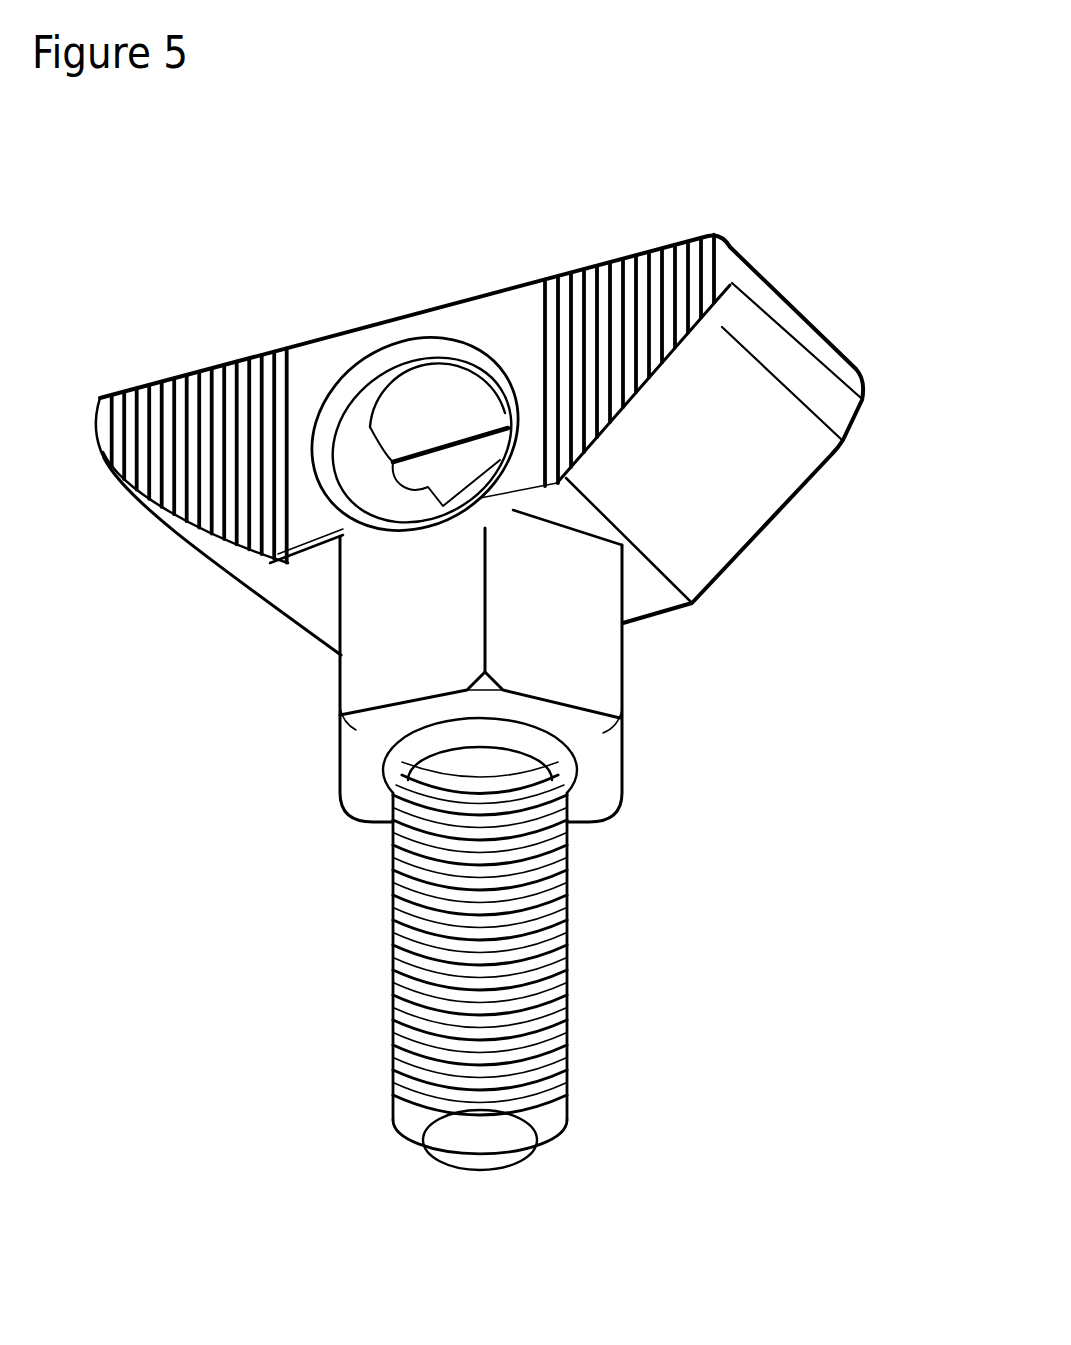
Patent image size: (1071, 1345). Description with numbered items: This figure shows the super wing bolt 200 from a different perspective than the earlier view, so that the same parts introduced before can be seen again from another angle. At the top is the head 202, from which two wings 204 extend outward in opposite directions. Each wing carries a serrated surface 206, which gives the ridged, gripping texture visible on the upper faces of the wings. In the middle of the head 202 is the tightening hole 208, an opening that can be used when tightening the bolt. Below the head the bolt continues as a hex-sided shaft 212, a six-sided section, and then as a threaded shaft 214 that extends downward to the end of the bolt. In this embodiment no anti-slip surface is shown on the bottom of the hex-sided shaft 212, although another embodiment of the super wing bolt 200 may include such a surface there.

The super wing bolt 200 is at (443, 178).
The head 202 is at (401, 316).
The wings 204 is at (858, 267).
The serrated surfaces 206 is at (610, 252).
The tightening hole 208 is at (395, 499).
The hex-sided shaft 212 is at (393, 672).
The threaded shaft 214 is at (390, 1046).